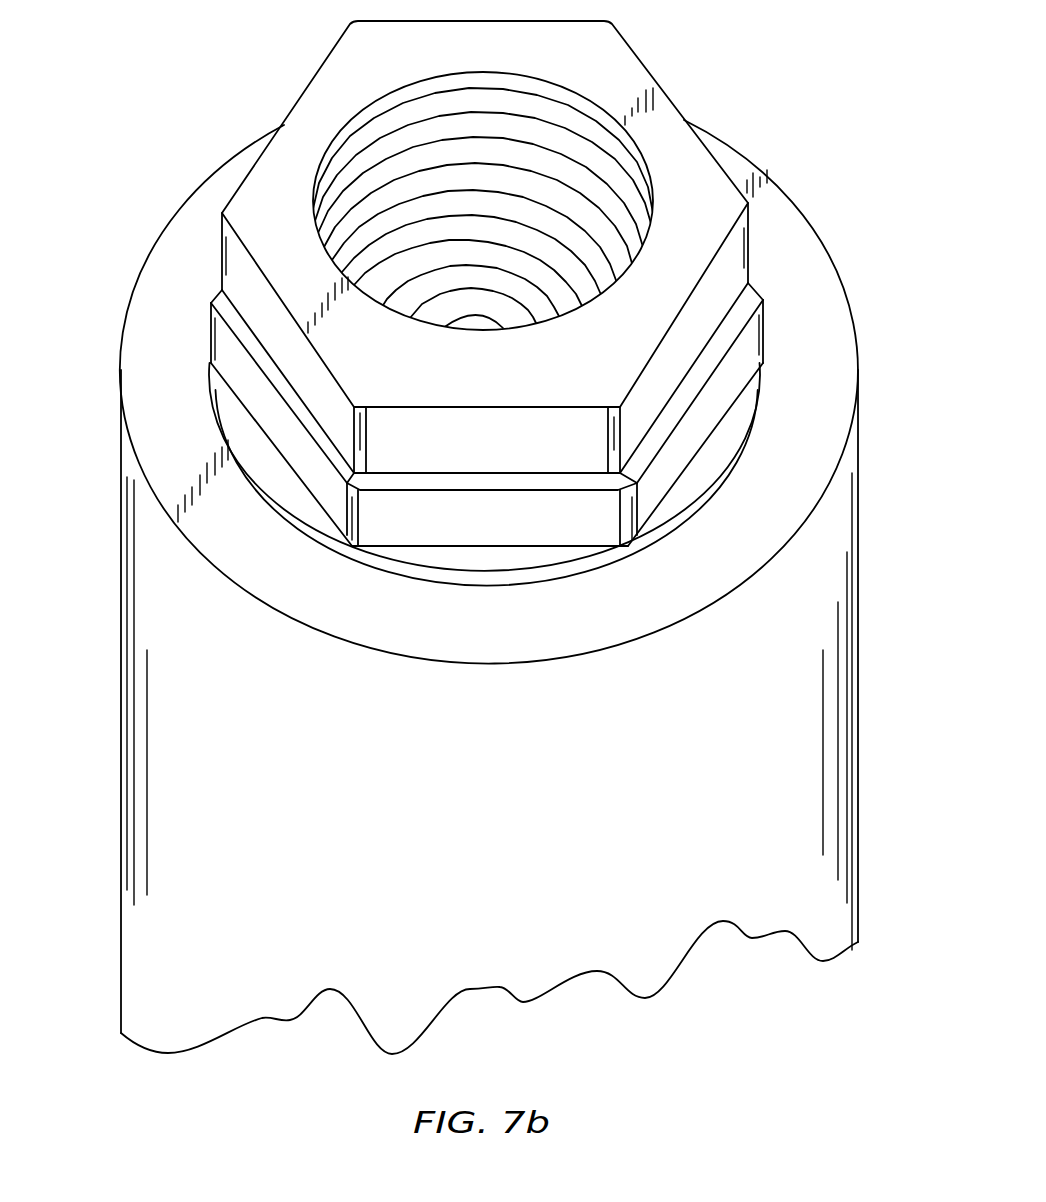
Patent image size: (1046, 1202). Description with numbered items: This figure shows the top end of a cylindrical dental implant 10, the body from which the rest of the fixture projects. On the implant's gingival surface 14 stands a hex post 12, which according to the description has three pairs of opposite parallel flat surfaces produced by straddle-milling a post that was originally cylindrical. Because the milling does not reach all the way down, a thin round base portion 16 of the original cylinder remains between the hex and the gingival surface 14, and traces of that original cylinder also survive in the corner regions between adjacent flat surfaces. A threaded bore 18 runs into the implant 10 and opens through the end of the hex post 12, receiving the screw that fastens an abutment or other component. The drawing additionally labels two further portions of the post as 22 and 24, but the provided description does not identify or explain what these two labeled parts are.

The cylindrical dental implant 10 is at (481, 537).
The hex post 12 is at (120, 803).
The gingival surface 14 is at (148, 407).
The round base portion 16 is at (488, 283).
The threaded bore 18 is at (362, 160).
The upper hex section 22 is at (748, 255).
The lower hex section 24 is at (763, 325).